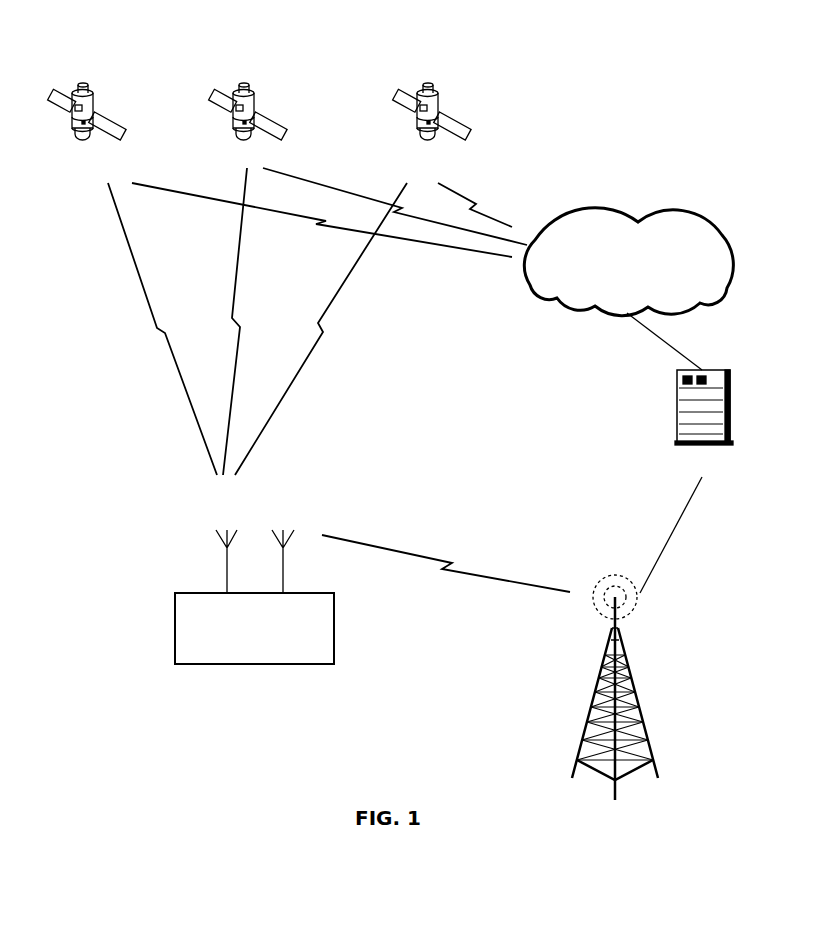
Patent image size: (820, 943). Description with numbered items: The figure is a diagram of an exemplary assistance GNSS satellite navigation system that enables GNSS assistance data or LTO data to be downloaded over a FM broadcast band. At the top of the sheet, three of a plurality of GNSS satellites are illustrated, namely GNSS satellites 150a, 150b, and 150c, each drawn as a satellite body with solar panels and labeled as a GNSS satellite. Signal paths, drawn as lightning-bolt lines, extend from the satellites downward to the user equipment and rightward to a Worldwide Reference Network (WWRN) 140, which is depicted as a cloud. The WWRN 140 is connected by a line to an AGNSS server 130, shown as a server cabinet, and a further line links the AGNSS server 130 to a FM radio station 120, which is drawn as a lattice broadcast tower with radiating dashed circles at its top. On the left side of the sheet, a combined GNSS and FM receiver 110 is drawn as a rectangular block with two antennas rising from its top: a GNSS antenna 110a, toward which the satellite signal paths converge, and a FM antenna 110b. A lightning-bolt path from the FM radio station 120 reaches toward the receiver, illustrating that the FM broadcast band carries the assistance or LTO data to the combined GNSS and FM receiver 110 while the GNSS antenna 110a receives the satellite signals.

The GNSS satellite 150a is at (107, 112).
The GNSS satellite 150b is at (270, 115).
The GNSS satellite 150c is at (455, 110).
The Worldwide Reference Network (WWRN) 140 is at (680, 210).
The AGNSS server 130 is at (737, 412).
The FM radio station 120 is at (625, 635).
The combined GNSS and FM receiver 110 is at (337, 638).
The GNSS antenna 110a is at (230, 525).
The FM antenna 110b is at (298, 527).